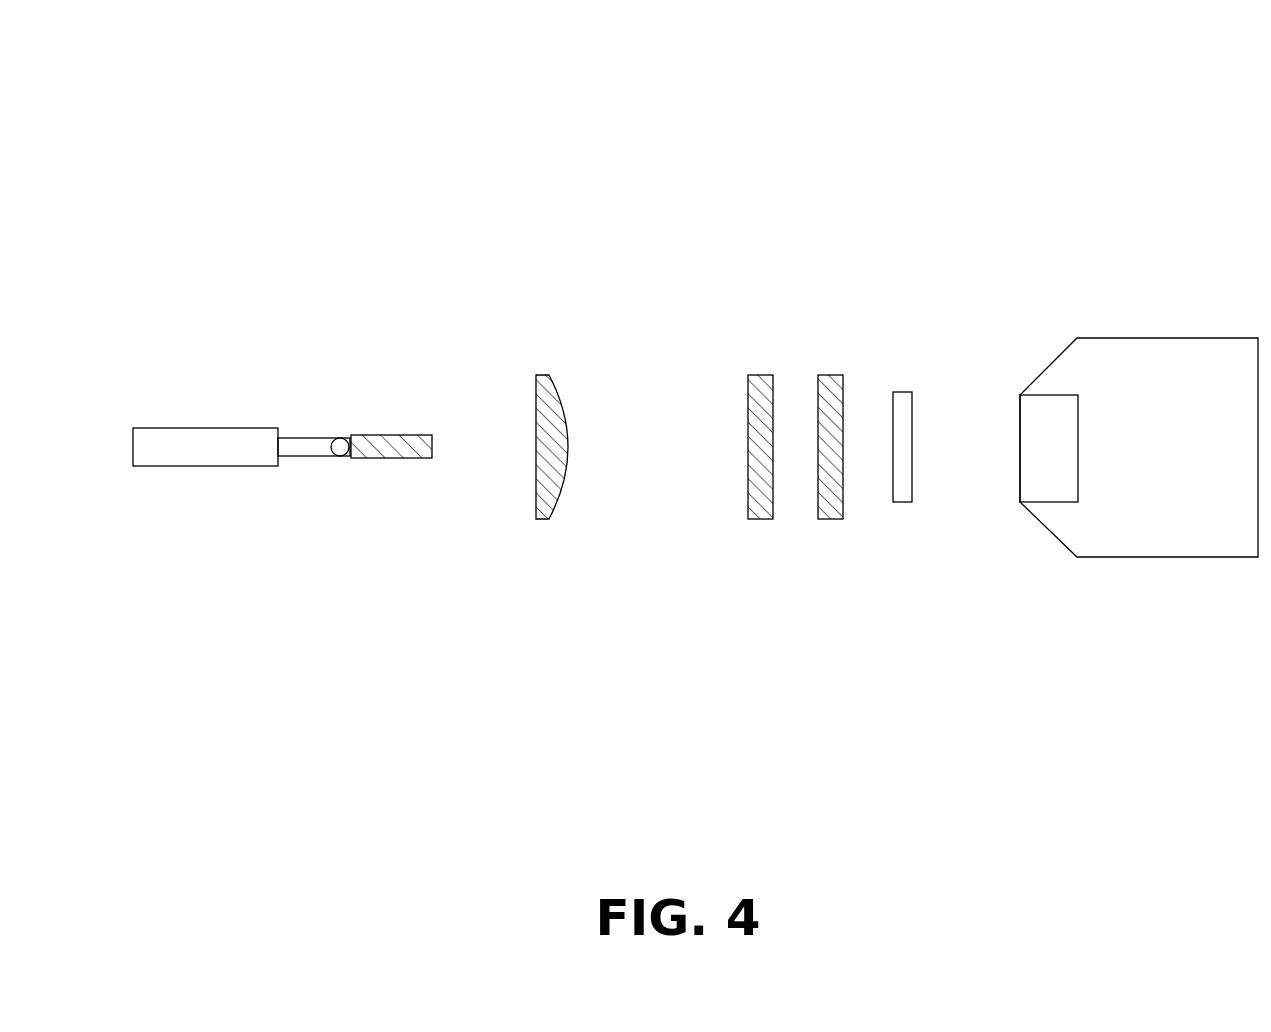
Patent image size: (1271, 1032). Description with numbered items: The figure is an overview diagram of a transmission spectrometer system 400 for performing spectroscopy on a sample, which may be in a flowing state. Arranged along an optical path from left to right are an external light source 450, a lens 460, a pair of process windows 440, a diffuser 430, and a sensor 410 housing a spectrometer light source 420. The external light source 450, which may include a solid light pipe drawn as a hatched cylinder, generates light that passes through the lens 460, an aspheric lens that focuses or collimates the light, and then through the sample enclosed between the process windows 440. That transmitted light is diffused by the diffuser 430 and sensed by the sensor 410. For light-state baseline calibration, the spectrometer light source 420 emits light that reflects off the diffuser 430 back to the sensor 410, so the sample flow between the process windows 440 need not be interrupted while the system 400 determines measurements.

The transmission spectrometer system 400 is at (167, 42).
The sensor 410 is at (1182, 338).
The spectrometer light source 420 is at (1078, 442).
The diffuser 430 is at (908, 392).
The process windows 440 is at (796, 480).
The external light source 450 is at (282, 489).
The lens 460 is at (546, 480).